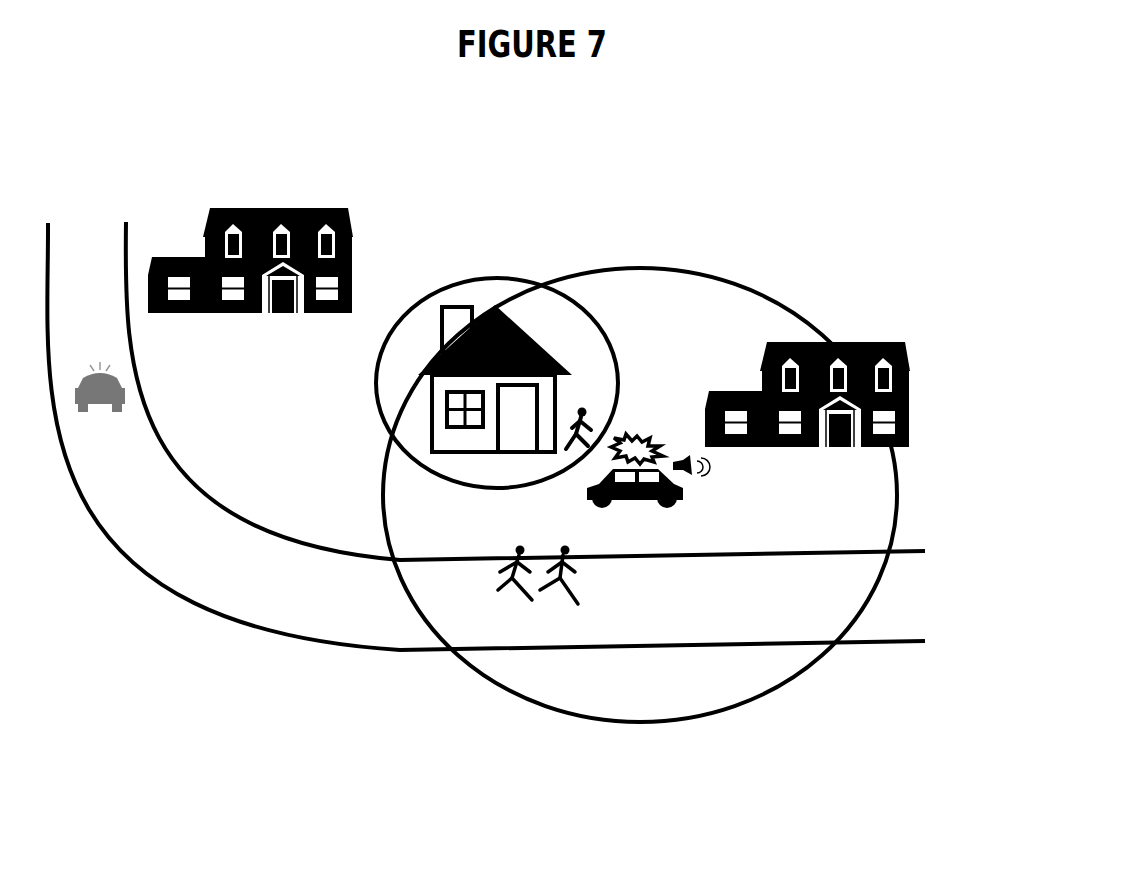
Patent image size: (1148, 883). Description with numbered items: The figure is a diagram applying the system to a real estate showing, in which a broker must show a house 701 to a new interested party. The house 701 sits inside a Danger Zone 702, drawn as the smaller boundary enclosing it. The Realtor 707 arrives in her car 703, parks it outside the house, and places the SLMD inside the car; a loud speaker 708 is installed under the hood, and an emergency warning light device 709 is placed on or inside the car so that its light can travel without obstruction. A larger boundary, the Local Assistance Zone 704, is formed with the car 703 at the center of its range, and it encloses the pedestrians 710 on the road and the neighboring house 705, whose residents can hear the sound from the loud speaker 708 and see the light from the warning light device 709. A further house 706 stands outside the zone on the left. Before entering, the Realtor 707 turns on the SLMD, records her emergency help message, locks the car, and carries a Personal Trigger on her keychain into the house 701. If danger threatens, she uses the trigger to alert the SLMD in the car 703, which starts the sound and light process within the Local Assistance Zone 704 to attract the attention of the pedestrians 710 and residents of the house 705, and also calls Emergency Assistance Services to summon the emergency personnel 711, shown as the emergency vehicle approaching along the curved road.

The house 701 is at (542, 338).
The Danger Zone 702 is at (471, 275).
The car 703 is at (674, 518).
The Local Assistance Zone 704 is at (666, 268).
The house 705 is at (844, 339).
The neighboring house 706 is at (282, 194).
The Realtor 707 is at (585, 397).
The loud speaker 708 is at (698, 482).
The emergency warning light device 709 is at (630, 434).
The pedestrians 710 is at (544, 546).
The emergency personnel 711 is at (118, 366).